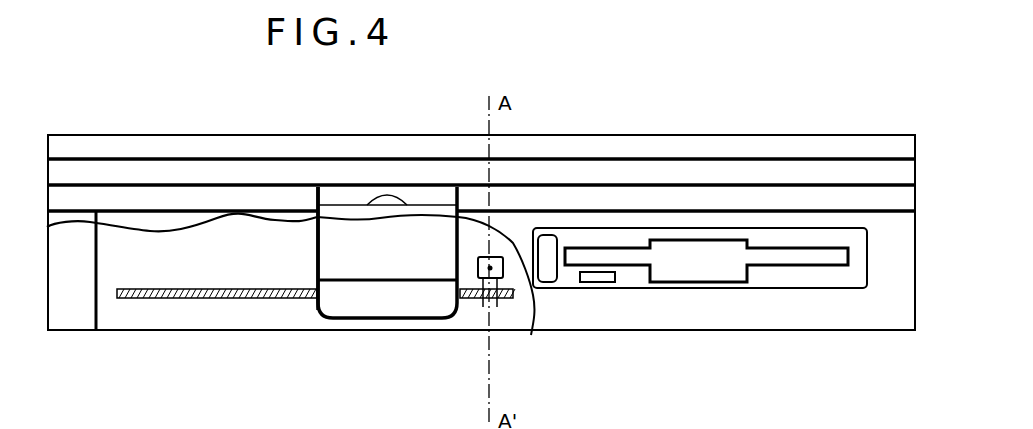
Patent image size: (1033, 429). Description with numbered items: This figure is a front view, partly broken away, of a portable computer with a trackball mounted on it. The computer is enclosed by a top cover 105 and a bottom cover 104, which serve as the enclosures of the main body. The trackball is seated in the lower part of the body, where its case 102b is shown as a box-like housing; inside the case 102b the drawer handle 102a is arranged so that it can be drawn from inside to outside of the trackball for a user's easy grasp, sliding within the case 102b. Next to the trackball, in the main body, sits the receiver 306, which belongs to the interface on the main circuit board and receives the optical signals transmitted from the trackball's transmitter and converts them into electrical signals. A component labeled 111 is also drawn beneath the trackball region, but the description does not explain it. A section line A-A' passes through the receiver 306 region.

The bottom cover 104 is at (860, 318).
The top cover 105 is at (817, 195).
The drawer handle 102a is at (390, 318).
The case 102b is at (325, 267).
The substrate 111 is at (468, 300).
The receiver 306 is at (503, 268).